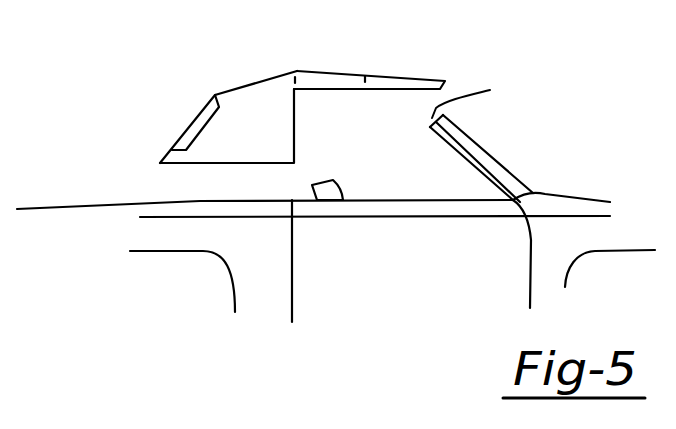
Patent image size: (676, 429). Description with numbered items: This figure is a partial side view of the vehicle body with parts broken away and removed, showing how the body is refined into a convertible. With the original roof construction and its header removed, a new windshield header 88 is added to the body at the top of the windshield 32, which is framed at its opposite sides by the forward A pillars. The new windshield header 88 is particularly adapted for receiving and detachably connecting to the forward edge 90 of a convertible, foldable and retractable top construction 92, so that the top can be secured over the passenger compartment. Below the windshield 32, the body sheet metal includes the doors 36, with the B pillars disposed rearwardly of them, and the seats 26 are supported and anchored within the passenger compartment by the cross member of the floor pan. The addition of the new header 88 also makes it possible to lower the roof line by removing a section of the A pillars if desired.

The convertible, foldable and retractable top construction 92 is at (322, 72).
The forward edge 90 is at (445, 81).
The windshield header 88 is at (477, 93).
The windshield 32 is at (480, 155).
The doors 36 is at (503, 247).
The seats 26 is at (370, 148).